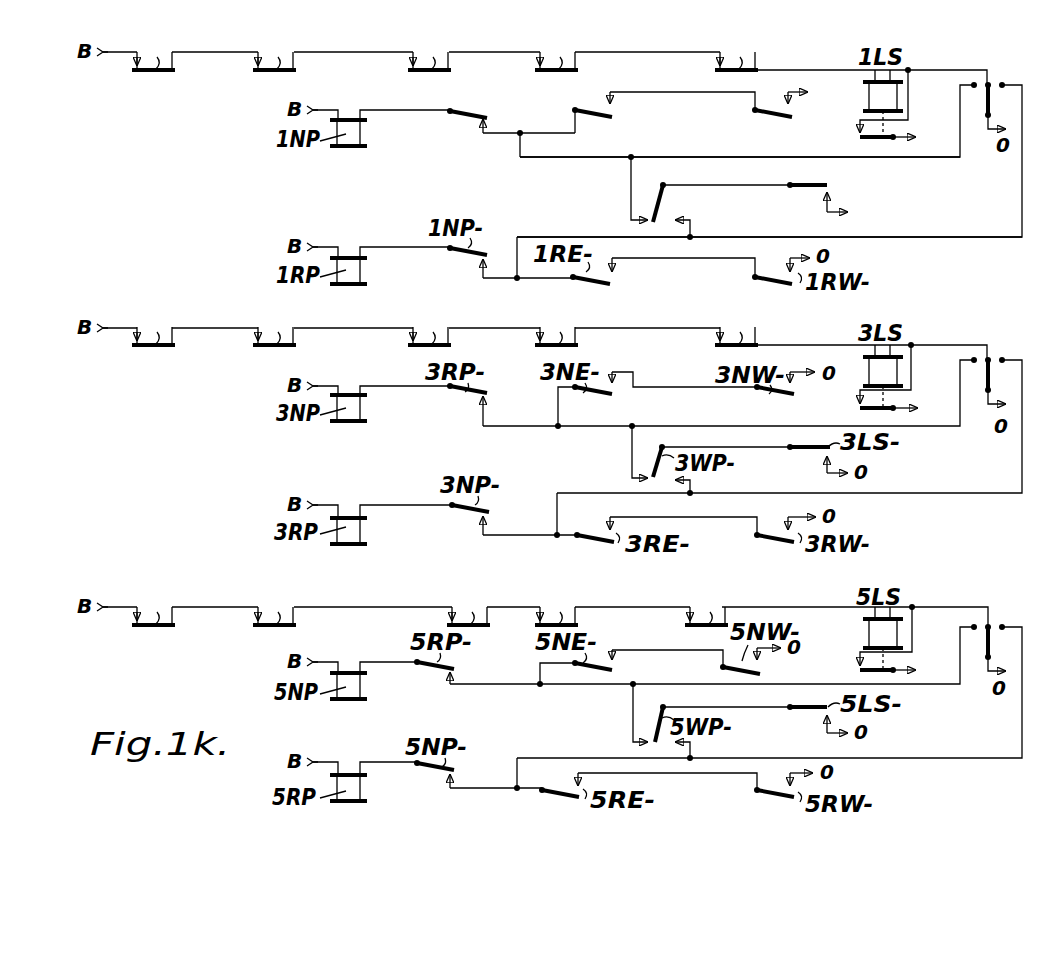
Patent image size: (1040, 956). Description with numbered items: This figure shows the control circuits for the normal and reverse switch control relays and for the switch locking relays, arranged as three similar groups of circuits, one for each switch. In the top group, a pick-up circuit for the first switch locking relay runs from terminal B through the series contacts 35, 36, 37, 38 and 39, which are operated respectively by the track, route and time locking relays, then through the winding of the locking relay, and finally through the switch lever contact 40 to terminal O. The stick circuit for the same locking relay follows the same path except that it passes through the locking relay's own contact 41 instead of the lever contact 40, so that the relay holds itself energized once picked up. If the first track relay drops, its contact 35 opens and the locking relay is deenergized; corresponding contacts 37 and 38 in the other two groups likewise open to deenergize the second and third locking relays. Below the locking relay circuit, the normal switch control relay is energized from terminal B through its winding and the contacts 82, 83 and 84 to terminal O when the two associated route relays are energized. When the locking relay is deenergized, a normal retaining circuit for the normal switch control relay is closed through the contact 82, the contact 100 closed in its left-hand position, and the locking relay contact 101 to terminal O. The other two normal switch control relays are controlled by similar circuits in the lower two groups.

The contact 2AAS- 35 is at (161, 325).
The contact 2BAS- 36 is at (293, 327).
The contact 4AS- 37 is at (449, 328).
The contact 3WS- 38 is at (572, 328).
The contact 1TR- 39 is at (747, 330).
The contact 1V- 40 is at (1000, 68).
The contact 41 of relay 1LS 41 is at (859, 138).
The contact 1RP- 82 is at (468, 106).
The contact 1NE- 83 is at (580, 106).
The contact 1NW- 84 is at (775, 122).
The contact 1WP- 100 is at (654, 202).
The contact 1LS- 101 is at (818, 190).